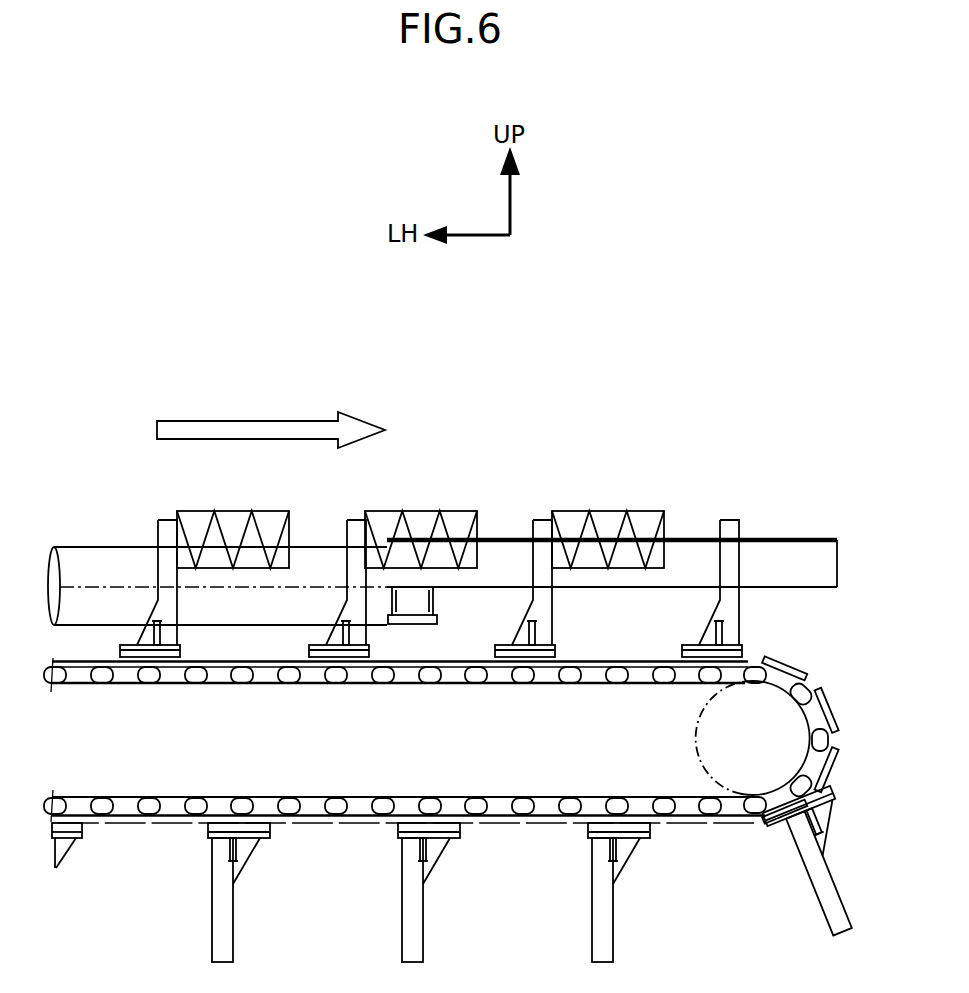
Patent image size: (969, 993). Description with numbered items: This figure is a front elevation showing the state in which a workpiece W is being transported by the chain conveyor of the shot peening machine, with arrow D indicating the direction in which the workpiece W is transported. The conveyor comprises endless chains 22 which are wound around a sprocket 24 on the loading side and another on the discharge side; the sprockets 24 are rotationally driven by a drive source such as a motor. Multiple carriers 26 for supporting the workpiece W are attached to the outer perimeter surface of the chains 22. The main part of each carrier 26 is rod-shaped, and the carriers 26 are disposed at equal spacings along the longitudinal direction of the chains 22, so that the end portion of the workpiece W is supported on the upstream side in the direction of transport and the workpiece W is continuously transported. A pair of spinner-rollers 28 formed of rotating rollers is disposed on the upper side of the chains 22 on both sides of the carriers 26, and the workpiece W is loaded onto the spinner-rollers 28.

The endless chains 22 is at (102, 676).
The sprocket 24 is at (695, 736).
The carrier 26 is at (177, 605).
The spinner-roller 28 is at (90, 547).
The workpiece W is at (234, 511).
The transport direction arrow D is at (248, 420).